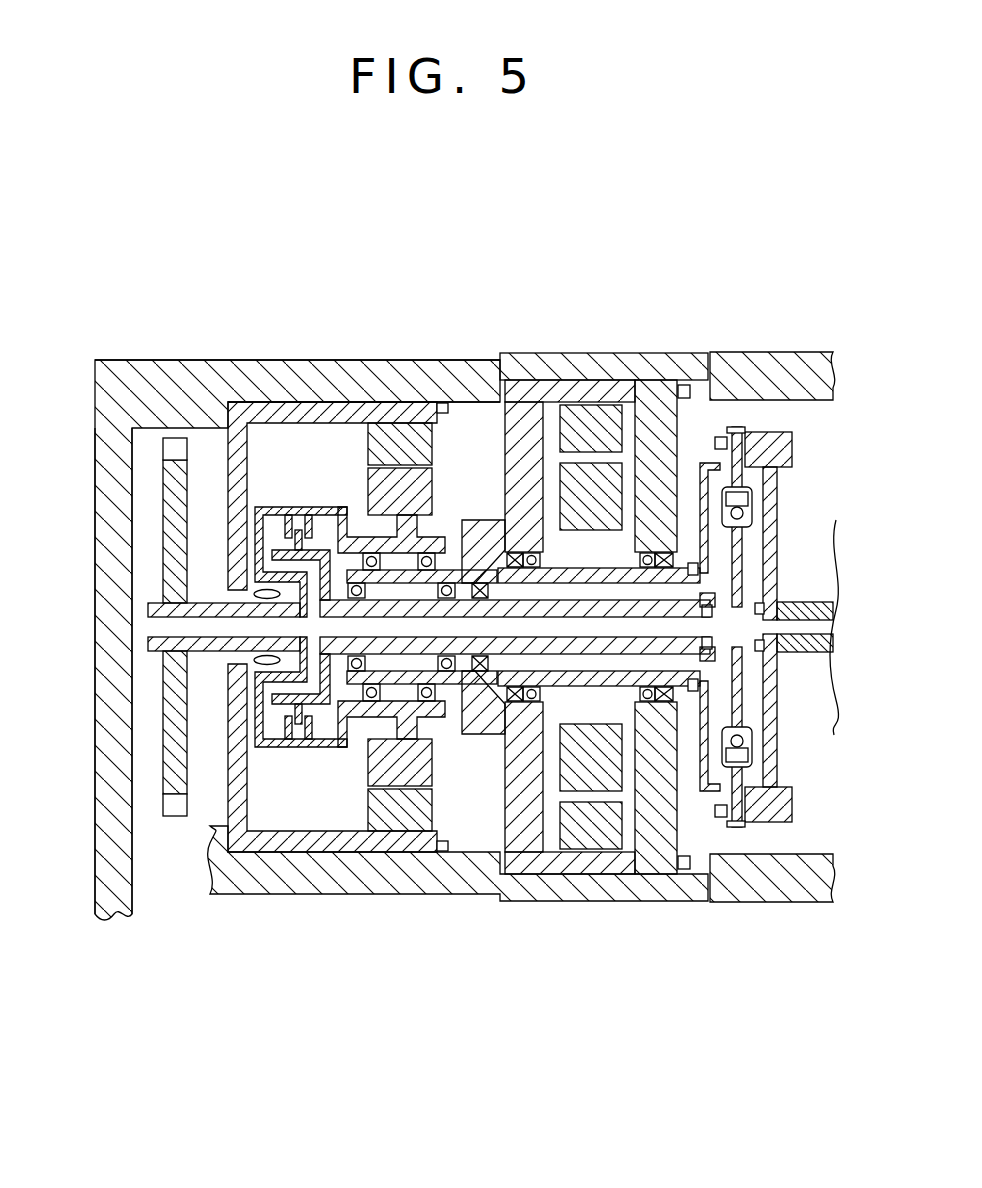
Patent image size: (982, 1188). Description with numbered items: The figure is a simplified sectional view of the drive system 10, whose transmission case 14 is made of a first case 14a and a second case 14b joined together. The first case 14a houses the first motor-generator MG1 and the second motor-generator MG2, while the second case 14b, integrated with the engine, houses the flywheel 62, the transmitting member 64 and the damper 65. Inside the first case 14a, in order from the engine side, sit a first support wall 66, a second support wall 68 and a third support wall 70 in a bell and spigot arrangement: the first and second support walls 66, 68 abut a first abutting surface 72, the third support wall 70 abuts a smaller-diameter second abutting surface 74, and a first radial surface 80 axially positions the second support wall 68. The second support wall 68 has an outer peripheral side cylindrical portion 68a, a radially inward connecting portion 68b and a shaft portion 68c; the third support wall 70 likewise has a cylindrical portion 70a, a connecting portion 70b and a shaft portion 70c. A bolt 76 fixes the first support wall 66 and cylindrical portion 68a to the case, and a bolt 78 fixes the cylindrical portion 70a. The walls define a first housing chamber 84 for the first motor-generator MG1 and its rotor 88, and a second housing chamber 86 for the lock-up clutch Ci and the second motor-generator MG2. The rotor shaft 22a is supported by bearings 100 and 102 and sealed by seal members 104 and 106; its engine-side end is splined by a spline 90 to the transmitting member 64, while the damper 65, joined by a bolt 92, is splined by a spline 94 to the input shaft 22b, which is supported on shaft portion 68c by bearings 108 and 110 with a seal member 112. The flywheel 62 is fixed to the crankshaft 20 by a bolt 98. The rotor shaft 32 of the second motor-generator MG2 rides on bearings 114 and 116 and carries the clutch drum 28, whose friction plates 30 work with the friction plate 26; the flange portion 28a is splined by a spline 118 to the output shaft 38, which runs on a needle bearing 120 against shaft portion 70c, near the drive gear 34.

The drive system 10 is at (638, 209).
The transmission case 14 is at (683, 296).
The first case 14a is at (686, 372).
The second case 14b is at (770, 368).
The crankshaft 20 is at (813, 602).
The rotor shaft 22a is at (652, 690).
The input shaft 22b is at (483, 655).
The friction plate 26 is at (260, 723).
The clutch drum 28 is at (299, 508).
The flange portion 28a is at (262, 672).
The friction plates 30 is at (288, 742).
The rotor shaft 32 is at (392, 735).
The drive gear 34 is at (173, 510).
The output shaft 38 is at (177, 682).
The flywheel 62 is at (778, 450).
The transmitting member 64 is at (737, 770).
The damper 65 is at (745, 545).
The first support wall 66 is at (652, 410).
The second support wall 68 is at (498, 429).
The outer peripheral side cylindrical portion 68a is at (585, 790).
The connecting portion 68b is at (540, 560).
The shaft portion 68c is at (455, 400).
The third support wall 70 is at (213, 445).
The outer peripheral side cylindrical portion 70a is at (283, 396).
The connecting portion 70b is at (183, 463).
The shaft portion 70c is at (256, 622).
The first abutting surface 72 is at (563, 420).
The second abutting surface 74 is at (353, 398).
The bolt 76 is at (683, 384).
The bolt 78 is at (515, 478).
The first radial surface 80 is at (272, 408).
The first housing chamber 84 is at (600, 562).
The second housing chamber 86 is at (320, 484).
The rotor 88 is at (598, 690).
The spline 90 is at (702, 585).
The bolt 92 is at (722, 426).
The spline 94 is at (722, 612).
The bolt 98 is at (776, 662).
The bearing 100 is at (733, 730).
The bearing 102 is at (550, 410).
The seal member 104 is at (704, 717).
The seal member 106 is at (483, 547).
The bearing 108 is at (480, 692).
The bearing 110 is at (253, 590).
The seal member 112 is at (445, 672).
The bearing 114 is at (400, 790).
The bearing 116 is at (370, 700).
The spline 118 is at (312, 720).
The needle bearing 120 is at (255, 646).
The lock-up clutch Ci is at (310, 487).
The first motor-generator MG1 is at (547, 799).
The second motor-generator MG2 is at (356, 458).